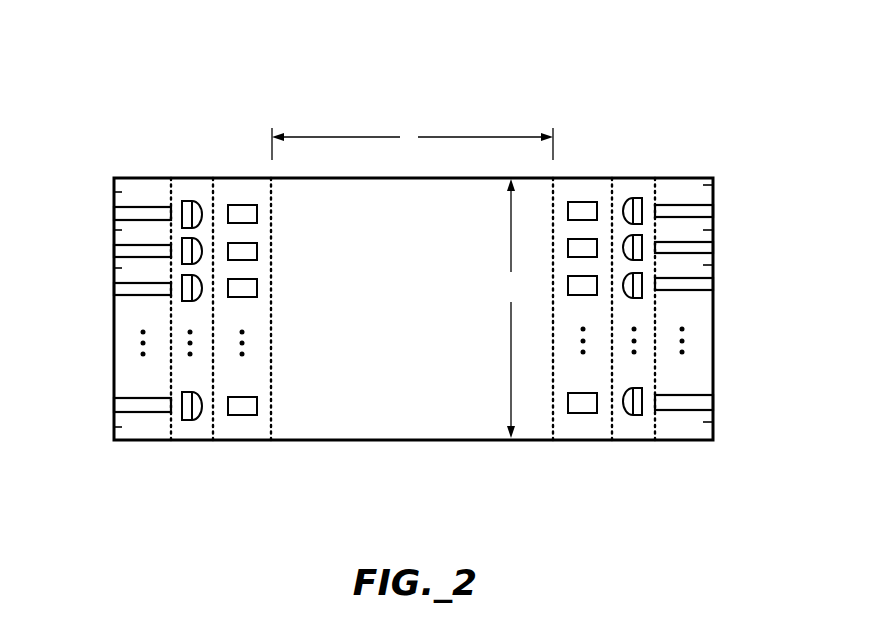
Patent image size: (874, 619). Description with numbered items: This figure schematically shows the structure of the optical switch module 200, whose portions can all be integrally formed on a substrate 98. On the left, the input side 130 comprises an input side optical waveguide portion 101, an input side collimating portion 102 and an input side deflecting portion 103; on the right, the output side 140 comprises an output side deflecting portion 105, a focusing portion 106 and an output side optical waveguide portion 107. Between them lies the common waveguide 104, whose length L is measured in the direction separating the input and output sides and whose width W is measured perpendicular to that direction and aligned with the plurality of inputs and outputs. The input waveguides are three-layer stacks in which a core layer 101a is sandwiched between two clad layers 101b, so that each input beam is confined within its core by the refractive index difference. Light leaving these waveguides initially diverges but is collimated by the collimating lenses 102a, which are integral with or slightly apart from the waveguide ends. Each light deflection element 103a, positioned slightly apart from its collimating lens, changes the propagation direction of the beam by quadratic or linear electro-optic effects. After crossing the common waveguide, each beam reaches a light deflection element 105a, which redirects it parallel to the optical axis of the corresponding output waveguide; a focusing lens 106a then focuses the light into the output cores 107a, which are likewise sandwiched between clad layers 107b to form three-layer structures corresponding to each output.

The optical switch module 200 is at (414, 63).
The substrate 98 is at (392, 178).
The input side optical waveguide portion 101 is at (170, 456).
The core layer 101a is at (115, 213).
The clad layer 101b is at (121, 192).
The input side collimating portion 102 is at (212, 456).
The collimating lens 102a is at (188, 200).
The input side deflecting portion 103 is at (270, 456).
The light deflection element 103a is at (240, 204).
The common waveguide 104 is at (552, 456).
The output side deflecting portion 105 is at (610, 456).
The light deflection element 105a is at (583, 202).
The focusing portion 106 is at (653, 456).
The focusing lens 106a is at (636, 198).
The output side optical waveguide portion 107 is at (712, 456).
The core 107a is at (713, 205).
The clad layer 107b is at (703, 185).
The input side 130 is at (270, 506).
The output side 140 is at (712, 506).